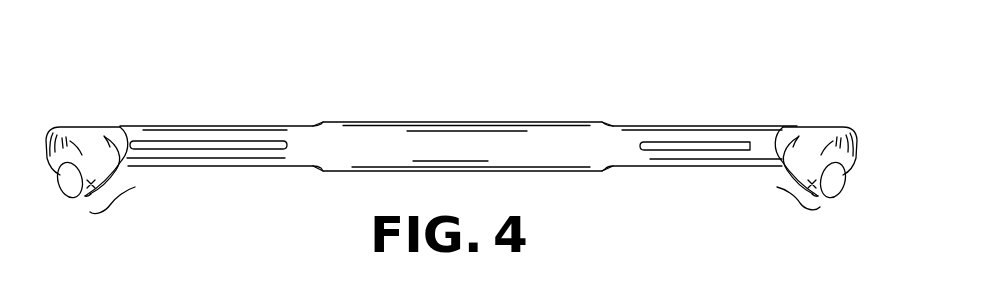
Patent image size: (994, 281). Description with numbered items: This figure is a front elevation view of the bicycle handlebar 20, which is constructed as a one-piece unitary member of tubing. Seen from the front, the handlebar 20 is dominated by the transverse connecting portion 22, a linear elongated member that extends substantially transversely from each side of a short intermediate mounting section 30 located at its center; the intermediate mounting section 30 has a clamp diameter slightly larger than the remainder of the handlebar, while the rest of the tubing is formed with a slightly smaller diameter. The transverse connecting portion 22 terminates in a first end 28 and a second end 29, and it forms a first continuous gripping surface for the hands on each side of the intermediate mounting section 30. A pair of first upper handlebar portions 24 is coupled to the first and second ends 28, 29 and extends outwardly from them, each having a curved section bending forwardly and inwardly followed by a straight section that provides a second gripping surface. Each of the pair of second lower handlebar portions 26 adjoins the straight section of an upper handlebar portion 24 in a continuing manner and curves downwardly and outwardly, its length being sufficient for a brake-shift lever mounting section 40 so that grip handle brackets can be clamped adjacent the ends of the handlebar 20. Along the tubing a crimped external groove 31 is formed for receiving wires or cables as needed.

The handlebar 20 is at (285, 72).
The transverse connecting portion 22 is at (738, 117).
The first upper handlebar portion 24 is at (53, 127).
The second lower handlebar portion 26 is at (143, 141).
The first end 28 is at (165, 125).
The second end 29 is at (742, 123).
The intermediate mounting section 30 is at (453, 156).
The crimped external groove 31 is at (240, 149).
The brake-shift lever mounting section 40 is at (88, 195).